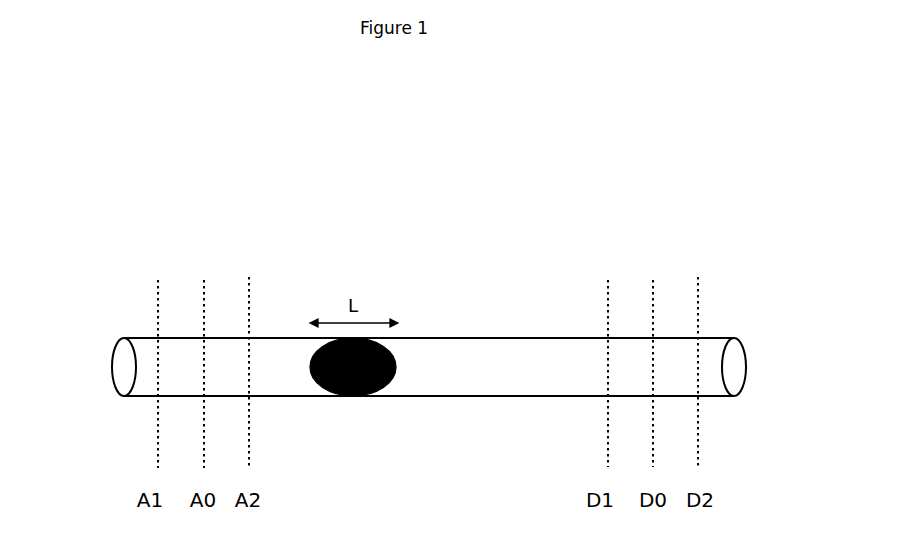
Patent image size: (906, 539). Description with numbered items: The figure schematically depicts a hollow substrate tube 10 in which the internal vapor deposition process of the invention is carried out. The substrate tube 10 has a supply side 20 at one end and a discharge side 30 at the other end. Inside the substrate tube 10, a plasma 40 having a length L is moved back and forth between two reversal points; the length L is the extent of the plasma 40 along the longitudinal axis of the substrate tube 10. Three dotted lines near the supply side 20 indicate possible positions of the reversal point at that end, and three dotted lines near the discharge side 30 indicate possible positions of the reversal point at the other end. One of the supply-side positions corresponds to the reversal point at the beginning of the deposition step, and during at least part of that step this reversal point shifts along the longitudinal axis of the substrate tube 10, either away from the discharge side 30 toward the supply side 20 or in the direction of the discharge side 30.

The substrate tube 10 is at (465, 330).
The supply side 20 is at (112, 367).
The discharge side 30 is at (746, 367).
The plasma 40 is at (354, 403).